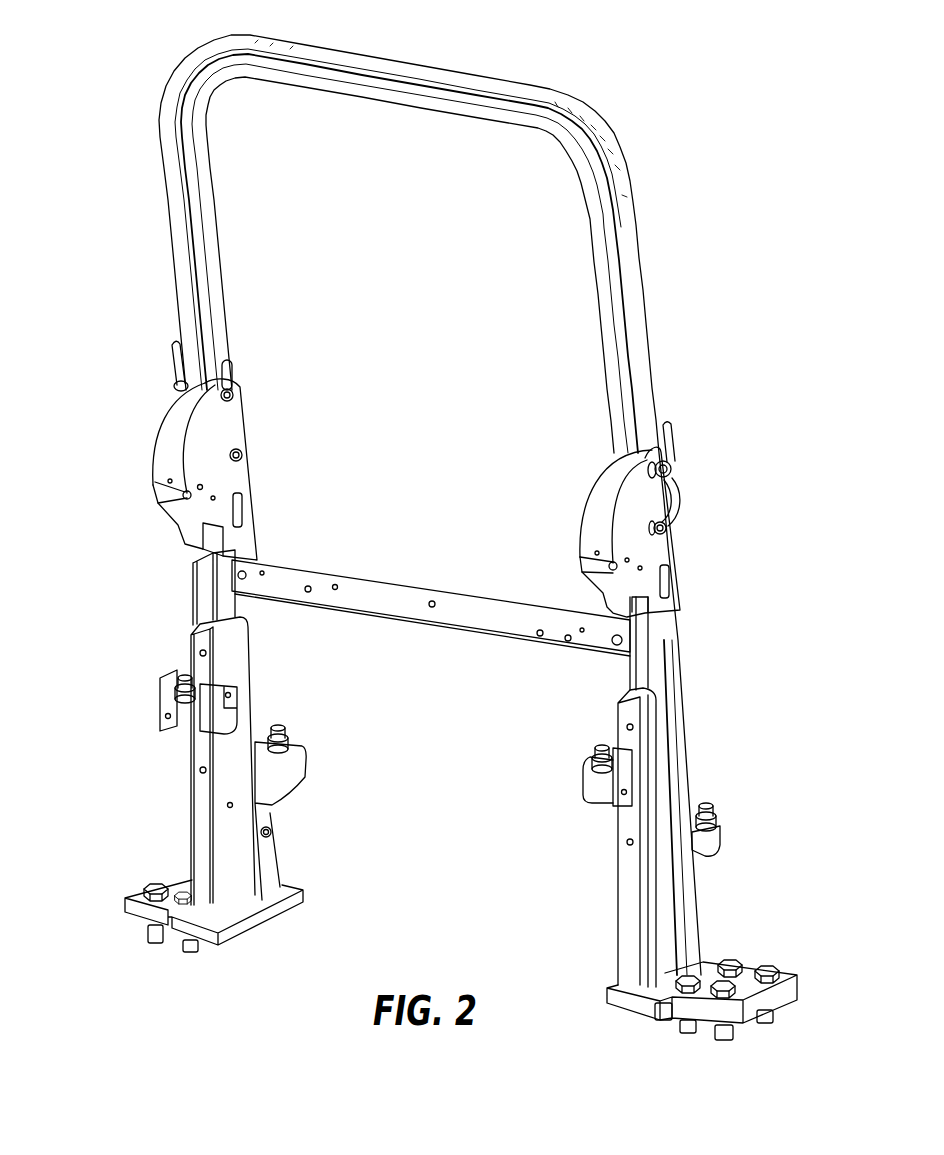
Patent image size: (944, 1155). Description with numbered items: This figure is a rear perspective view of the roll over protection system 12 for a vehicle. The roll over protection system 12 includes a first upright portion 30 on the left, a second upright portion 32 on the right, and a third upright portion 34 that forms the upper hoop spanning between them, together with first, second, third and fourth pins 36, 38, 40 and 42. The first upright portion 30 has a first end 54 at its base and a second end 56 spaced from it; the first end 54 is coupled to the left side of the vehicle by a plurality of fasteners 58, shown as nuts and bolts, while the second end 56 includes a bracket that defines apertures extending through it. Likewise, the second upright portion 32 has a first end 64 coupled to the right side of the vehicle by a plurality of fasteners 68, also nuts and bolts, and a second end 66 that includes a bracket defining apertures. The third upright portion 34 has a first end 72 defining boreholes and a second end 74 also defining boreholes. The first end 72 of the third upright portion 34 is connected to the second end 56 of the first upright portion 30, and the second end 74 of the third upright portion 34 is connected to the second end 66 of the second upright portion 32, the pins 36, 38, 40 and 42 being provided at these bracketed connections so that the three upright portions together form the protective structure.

The roll over protection system 12 is at (675, 108).
The third upright portion 34 is at (505, 88).
The first upright portion 30 is at (258, 712).
The second upright portion 32 is at (688, 785).
The first pin 36 is at (240, 395).
The second pin 38 is at (682, 475).
The third pin 40 is at (242, 455).
The fourth pin 42 is at (675, 530).
The second end of the first upright portion 56 is at (133, 487).
The second end of the second upright portion 66 is at (704, 554).
The first end of the third upright portion 72 is at (138, 432).
The second end of the third upright portion 74 is at (692, 445).
The first end of the first upright portion 54 is at (127, 882).
The first end of the second upright portion 64 is at (806, 966).
The fasteners 58 is at (185, 888).
The fasteners 68 is at (766, 970).